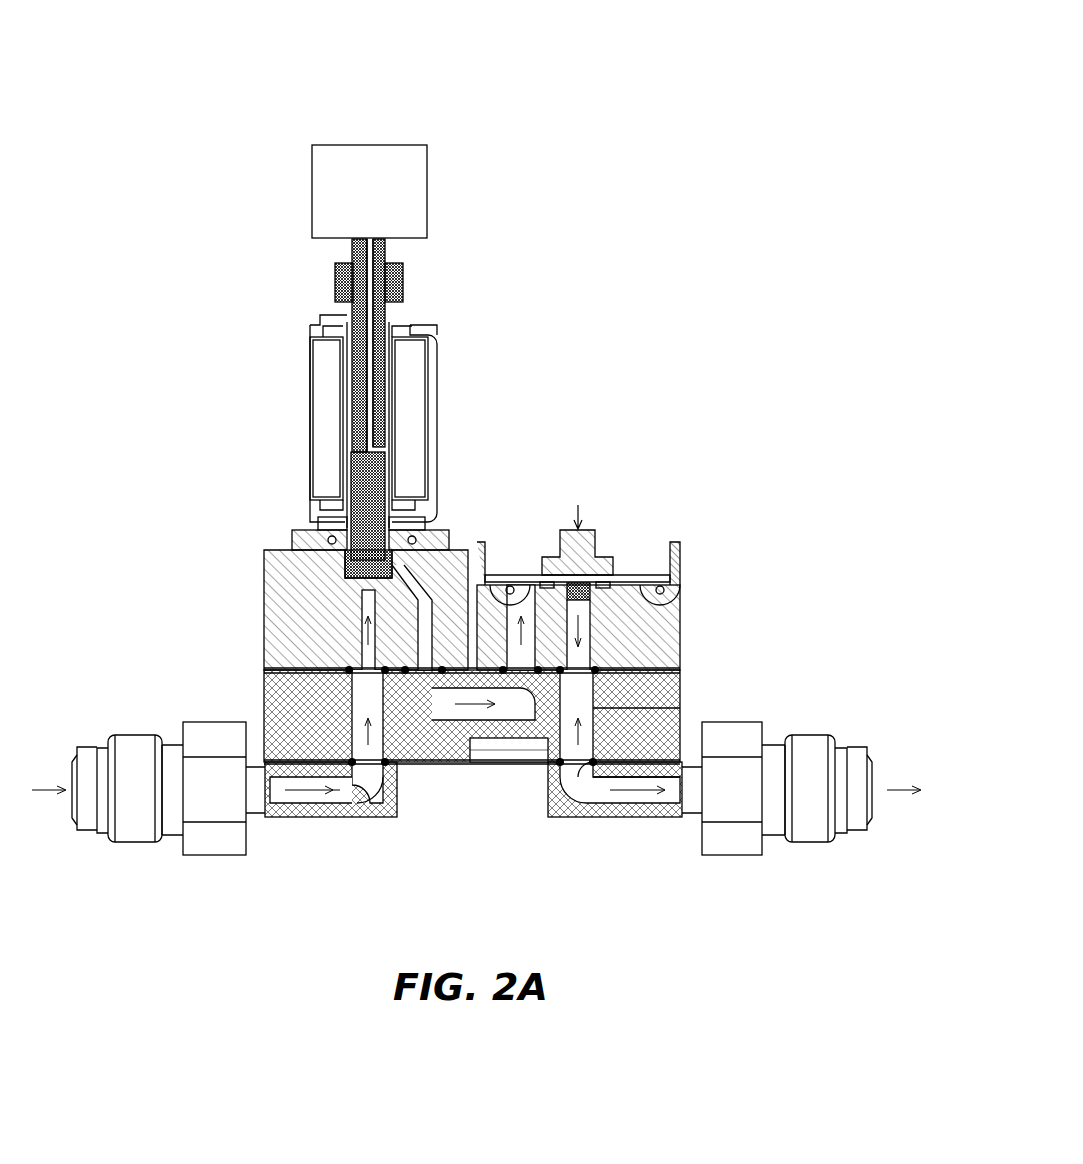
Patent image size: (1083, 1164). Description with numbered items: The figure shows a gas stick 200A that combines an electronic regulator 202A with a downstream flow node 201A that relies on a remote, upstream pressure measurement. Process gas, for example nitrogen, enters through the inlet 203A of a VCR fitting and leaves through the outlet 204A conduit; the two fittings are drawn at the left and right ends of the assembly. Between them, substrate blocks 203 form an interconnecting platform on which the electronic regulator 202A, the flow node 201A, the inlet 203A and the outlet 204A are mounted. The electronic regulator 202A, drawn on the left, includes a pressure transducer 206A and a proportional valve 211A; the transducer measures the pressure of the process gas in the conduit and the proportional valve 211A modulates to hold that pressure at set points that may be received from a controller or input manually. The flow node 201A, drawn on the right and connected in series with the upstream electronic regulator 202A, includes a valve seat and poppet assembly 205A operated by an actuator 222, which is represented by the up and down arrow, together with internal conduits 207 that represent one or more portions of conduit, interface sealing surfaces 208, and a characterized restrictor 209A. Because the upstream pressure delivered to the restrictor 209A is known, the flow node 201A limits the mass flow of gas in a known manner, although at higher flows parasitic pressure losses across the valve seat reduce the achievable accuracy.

The gas stick 200A is at (476, 497).
The pressure transducer 206A is at (369, 191).
The proportional valve 211A is at (348, 460).
The electronic regulator 202A is at (265, 595).
The flow node 201A is at (680, 585).
The characterized restrictor 209A is at (605, 558).
The valve seat and poppet assembly 205A is at (585, 530).
The actuator 222 is at (573, 507).
The internal conduits 207 is at (660, 662).
The interface sealing surfaces 208 is at (660, 707).
The substrate blocks 203 is at (440, 765).
The inlet 203A is at (55, 808).
The outlet 204A is at (886, 808).